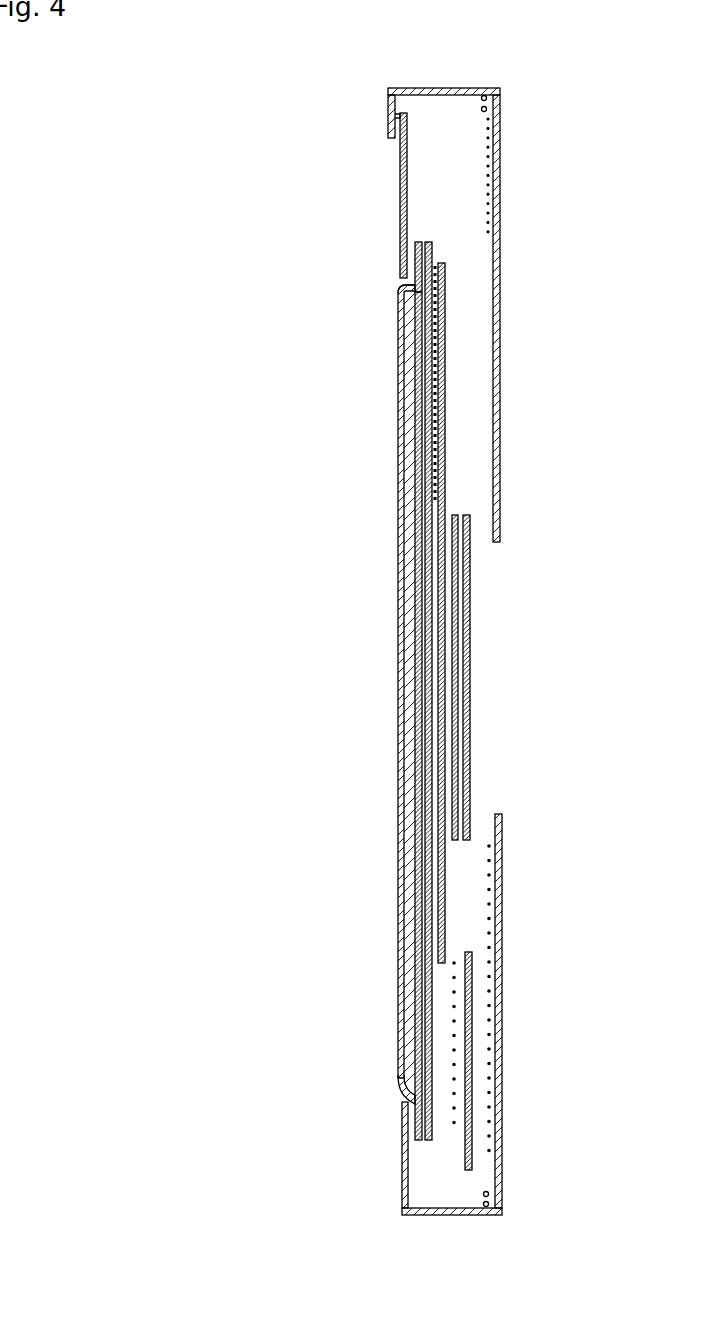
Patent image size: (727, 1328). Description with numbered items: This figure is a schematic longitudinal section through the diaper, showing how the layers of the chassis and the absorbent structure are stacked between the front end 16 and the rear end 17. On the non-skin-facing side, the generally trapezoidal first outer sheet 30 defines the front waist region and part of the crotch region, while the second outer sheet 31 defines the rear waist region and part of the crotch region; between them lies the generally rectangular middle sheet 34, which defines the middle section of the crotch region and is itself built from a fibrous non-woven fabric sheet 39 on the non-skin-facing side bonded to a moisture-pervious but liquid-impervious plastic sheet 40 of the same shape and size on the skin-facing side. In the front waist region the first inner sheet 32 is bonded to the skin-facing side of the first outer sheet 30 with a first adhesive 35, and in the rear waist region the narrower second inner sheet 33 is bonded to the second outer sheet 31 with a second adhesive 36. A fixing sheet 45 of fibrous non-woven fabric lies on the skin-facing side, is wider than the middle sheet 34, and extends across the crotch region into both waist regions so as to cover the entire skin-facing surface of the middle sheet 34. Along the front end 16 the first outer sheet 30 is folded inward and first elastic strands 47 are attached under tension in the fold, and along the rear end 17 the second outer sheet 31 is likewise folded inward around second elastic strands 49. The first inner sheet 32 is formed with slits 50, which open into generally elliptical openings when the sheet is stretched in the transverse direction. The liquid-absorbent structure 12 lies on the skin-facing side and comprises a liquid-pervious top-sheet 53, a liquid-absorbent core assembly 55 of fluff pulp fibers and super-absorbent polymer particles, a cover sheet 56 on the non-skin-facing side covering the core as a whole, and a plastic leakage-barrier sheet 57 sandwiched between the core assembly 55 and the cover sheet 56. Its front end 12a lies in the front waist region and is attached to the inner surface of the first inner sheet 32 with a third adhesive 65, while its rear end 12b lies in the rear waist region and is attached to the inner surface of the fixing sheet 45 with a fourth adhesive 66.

The liquid-absorbent structure 12 is at (376, 661).
The front end 12a is at (400, 1050).
The rear end 12b is at (397, 320).
The front end 16 is at (455, 1216).
The rear end 17 is at (445, 87).
The first outer sheet 30 is at (502, 1148).
The second outer sheet 31 is at (502, 228).
The first inner sheet 32 is at (463, 1157).
The second inner sheet 33 is at (400, 183).
The middle sheet 34 is at (527, 677).
The first adhesive 35 is at (492, 990).
The second adhesive 36 is at (491, 175).
The fibrous non-woven fabric sheet 39 is at (547, 557).
The plastic sheet 40 is at (459, 574).
The fixing sheet 45 is at (447, 405).
The first elastic strands 47 is at (489, 1204).
The second elastic strands 49 is at (487, 109).
The slits 50 is at (473, 1062).
The top-sheet 53 is at (400, 458).
The liquid-absorbent core assembly 55 is at (410, 483).
The cover sheet 56 is at (418, 242).
The leakage-barrier sheet 57 is at (419, 403).
The third adhesive 65 is at (455, 1006).
The fourth adhesive 66 is at (440, 290).